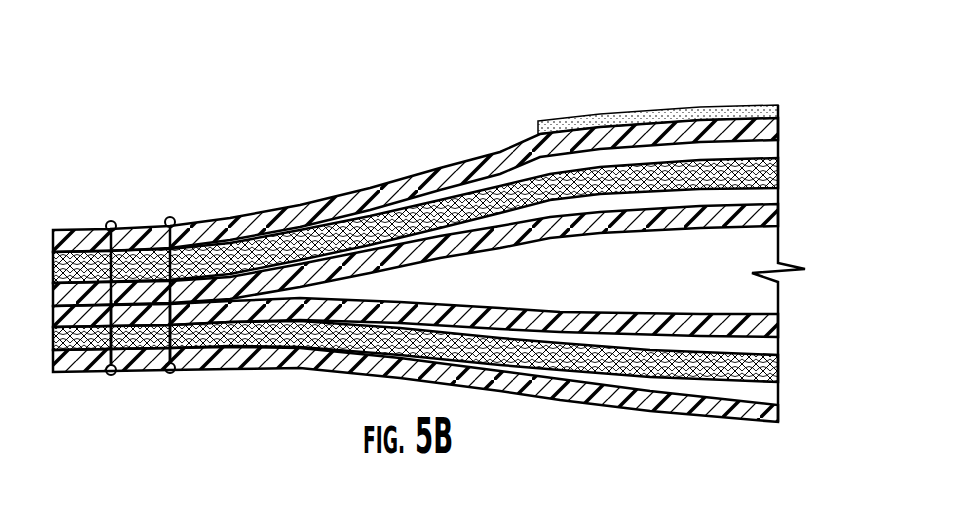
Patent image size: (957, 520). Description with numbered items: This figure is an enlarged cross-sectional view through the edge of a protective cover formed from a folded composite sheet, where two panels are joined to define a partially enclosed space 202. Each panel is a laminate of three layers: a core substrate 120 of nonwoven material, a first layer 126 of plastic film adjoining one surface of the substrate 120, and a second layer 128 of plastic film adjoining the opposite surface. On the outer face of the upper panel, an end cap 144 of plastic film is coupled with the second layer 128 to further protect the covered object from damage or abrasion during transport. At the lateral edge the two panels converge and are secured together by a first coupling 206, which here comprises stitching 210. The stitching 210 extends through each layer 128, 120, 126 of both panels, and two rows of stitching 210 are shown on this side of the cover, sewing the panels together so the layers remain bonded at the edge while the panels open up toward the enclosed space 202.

The second layer 128 is at (778, 130).
The substrate 120 is at (778, 178).
The first layer 126 is at (778, 214).
The end cap 144 is at (663, 110).
The partially enclosed space 202 is at (702, 276).
The first coupling 206 is at (143, 198).
The stitching 210 is at (152, 343).